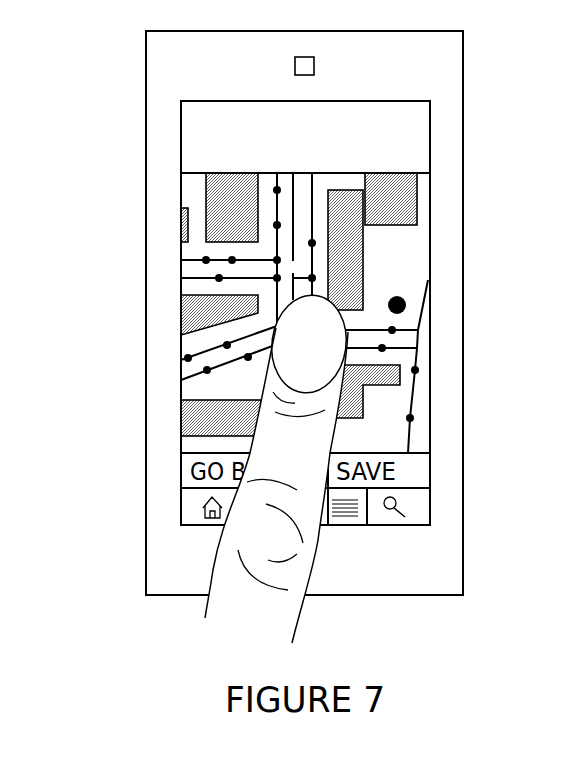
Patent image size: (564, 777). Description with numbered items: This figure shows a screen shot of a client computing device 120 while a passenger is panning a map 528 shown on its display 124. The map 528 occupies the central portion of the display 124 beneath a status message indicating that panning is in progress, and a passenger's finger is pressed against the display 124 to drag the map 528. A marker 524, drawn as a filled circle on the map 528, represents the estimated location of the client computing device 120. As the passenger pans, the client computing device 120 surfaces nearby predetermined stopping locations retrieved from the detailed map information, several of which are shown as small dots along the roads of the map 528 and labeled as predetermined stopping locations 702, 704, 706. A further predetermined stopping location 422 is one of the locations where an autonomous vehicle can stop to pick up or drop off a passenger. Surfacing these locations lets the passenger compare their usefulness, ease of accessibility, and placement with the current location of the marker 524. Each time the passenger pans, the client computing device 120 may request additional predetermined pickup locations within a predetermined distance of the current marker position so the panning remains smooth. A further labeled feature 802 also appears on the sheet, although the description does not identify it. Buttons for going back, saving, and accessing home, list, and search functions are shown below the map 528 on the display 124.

The client computing device 120 is at (0, 68).
The display 124 is at (0, 293).
The marker 524 is at (398, 300).
The map 528 is at (0, 370).
The predetermined stopping location 702 is at (181, 260).
The predetermined stopping location 704 is at (186, 358).
The predetermined stopping location 706 is at (207, 370).
The map buildings 802 is at (372, 304).
The predetermined stopping location 422 is at (208, 572).